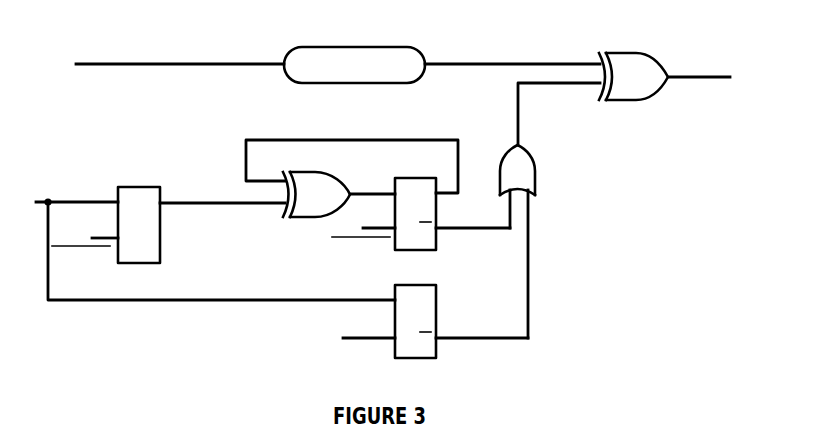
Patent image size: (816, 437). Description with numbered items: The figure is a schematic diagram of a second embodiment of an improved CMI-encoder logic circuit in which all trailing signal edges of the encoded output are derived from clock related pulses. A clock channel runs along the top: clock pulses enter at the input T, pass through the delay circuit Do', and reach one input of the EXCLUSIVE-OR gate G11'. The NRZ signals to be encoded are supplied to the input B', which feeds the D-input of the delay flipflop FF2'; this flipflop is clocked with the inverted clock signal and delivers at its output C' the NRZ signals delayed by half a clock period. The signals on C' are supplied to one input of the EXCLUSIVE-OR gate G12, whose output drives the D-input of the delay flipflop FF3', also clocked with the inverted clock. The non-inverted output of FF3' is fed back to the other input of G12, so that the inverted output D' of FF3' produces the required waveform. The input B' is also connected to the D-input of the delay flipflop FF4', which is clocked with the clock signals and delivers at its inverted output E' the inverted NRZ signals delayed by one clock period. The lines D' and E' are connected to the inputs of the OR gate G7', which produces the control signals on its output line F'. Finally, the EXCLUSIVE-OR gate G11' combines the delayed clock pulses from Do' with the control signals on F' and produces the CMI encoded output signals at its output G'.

The input for clock signals T is at (151, 62).
The delay circuit Do' is at (442, 53).
The EXCLUSIVE-OR gate G11' is at (633, 65).
The output G' is at (699, 92).
The output line F' is at (559, 114).
The OR gate G7' is at (543, 241).
The input for NRZ signals B' is at (204, 241).
The delay flipflop FF2' is at (134, 229).
The output C' is at (222, 193).
The EXCLUSIVE-OR gate G12 is at (318, 218).
The delay flipflop FF3' is at (410, 220).
The inverted output D' is at (473, 216).
The delay flipflop FF4' is at (396, 332).
The inverted output E' is at (482, 326).